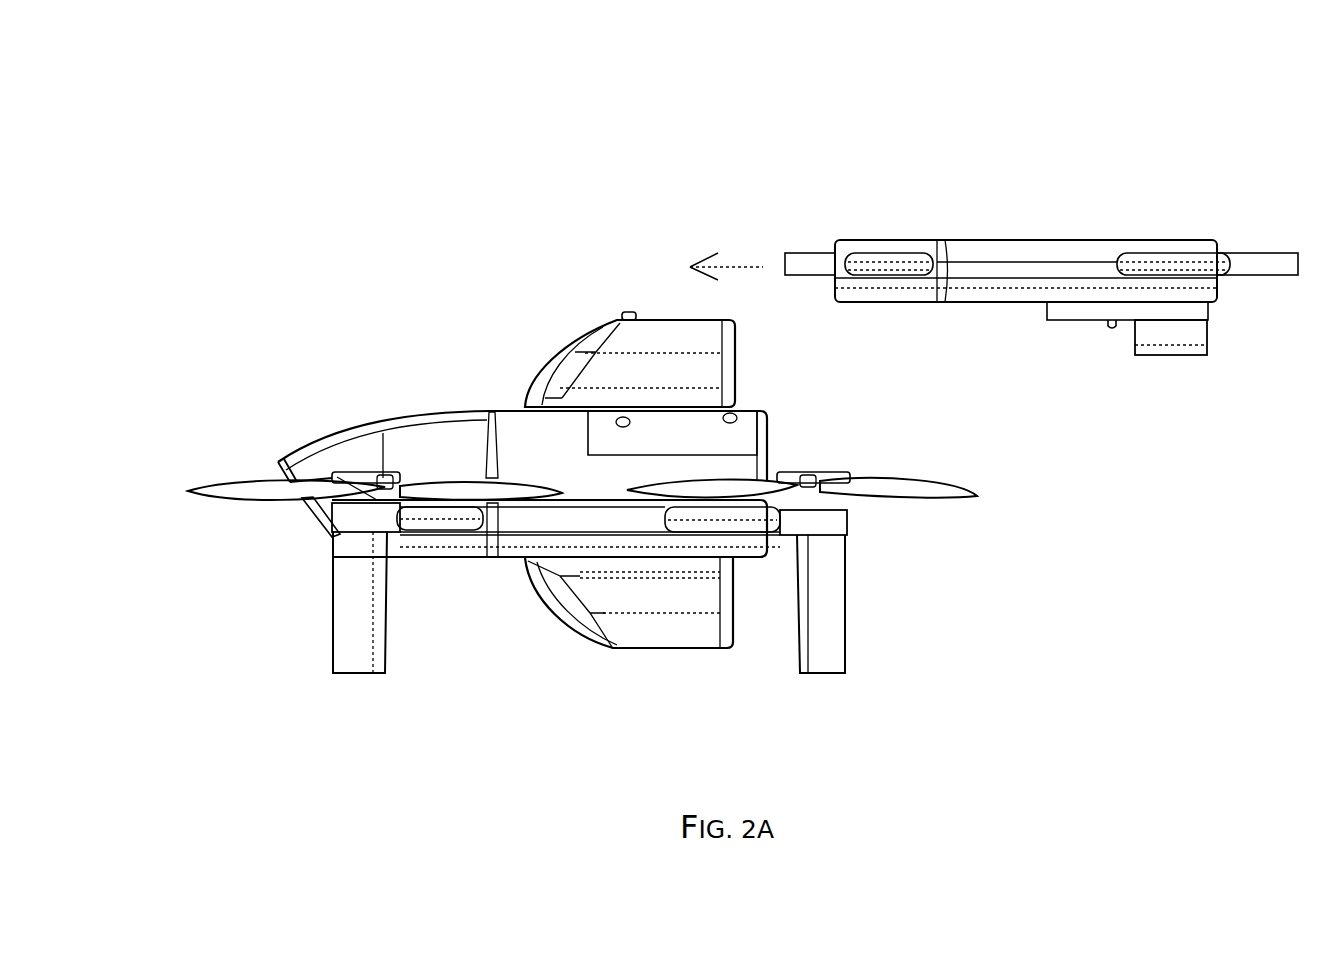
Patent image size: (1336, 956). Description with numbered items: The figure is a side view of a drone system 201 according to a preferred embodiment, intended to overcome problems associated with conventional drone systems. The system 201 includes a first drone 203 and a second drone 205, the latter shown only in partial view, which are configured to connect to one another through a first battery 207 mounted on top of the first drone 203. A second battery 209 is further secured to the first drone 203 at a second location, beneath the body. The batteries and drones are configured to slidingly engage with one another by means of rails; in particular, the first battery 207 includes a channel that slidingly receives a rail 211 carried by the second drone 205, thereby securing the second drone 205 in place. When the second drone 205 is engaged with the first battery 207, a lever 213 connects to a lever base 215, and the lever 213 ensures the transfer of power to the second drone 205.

The drone system 201 is at (205, 80).
The first drone 203 is at (333, 457).
The second drone 205 is at (1080, 255).
The first battery 207 is at (530, 367).
The second battery 209 is at (562, 622).
The rail 211 is at (1210, 337).
The lever 213 is at (620, 305).
The lever base 215 is at (1106, 334).